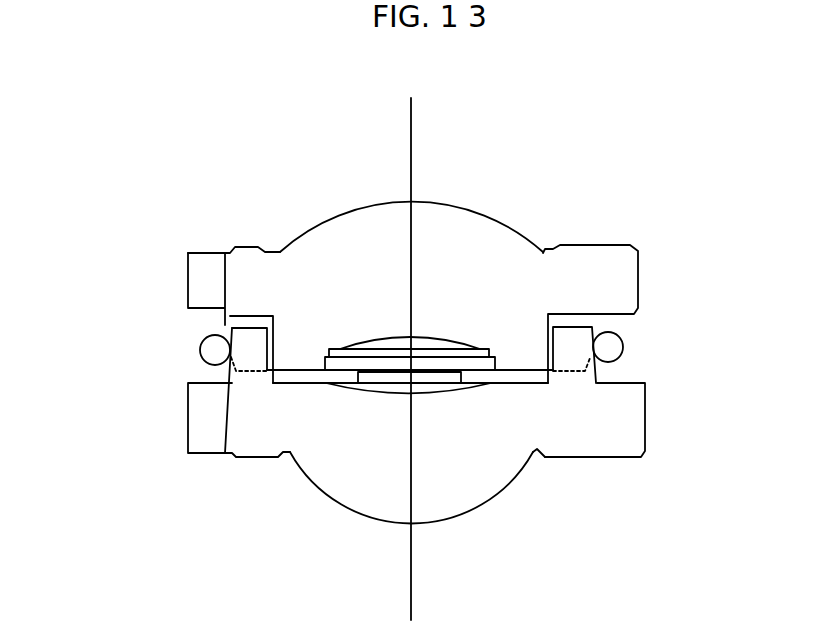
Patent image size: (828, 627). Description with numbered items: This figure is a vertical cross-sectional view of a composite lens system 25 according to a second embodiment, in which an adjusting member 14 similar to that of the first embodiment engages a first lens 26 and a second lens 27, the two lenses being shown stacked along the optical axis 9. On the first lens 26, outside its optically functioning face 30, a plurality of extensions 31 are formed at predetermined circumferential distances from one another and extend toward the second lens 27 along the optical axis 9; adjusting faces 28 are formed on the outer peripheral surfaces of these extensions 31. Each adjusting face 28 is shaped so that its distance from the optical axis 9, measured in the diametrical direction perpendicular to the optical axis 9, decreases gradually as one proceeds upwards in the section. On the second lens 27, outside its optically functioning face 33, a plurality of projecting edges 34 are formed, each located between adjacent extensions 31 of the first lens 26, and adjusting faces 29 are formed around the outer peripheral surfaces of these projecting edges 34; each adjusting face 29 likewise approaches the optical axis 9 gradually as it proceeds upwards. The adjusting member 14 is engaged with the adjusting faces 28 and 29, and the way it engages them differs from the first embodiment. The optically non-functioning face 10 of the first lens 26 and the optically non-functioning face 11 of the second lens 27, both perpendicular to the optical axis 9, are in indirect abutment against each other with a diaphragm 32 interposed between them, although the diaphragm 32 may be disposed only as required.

The optical axis 9 is at (412, 102).
The optically non-functioning face 10 is at (523, 382).
The optically non-functioning face 11 is at (303, 371).
The adjusting member 14 is at (624, 340).
The composite lens system 25 is at (98, 153).
The first lens 26 is at (345, 515).
The second lens 27 is at (348, 212).
The adjusting face 28 is at (618, 368).
The adjusting face 29 is at (592, 327).
The optically functioning face 30 is at (436, 392).
The extension 31 is at (607, 383).
The diaphragm 32 is at (280, 384).
The optically functioning face 33 is at (446, 342).
The projecting edge 34 is at (232, 328).